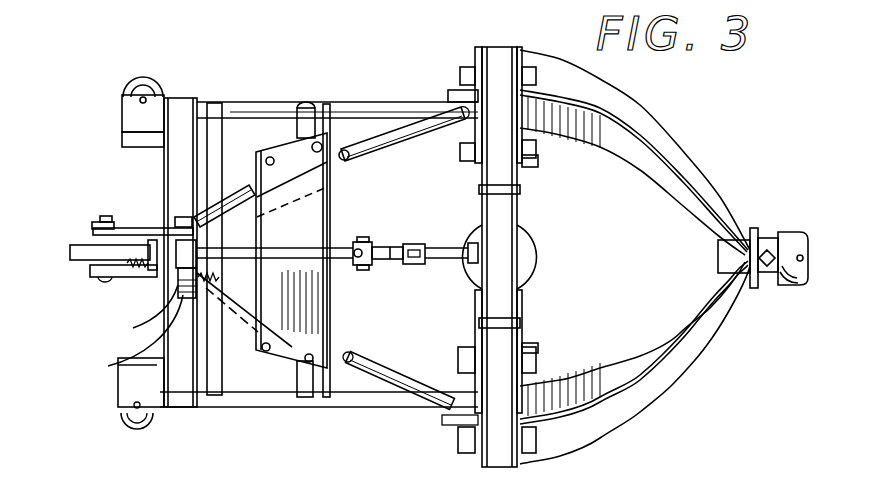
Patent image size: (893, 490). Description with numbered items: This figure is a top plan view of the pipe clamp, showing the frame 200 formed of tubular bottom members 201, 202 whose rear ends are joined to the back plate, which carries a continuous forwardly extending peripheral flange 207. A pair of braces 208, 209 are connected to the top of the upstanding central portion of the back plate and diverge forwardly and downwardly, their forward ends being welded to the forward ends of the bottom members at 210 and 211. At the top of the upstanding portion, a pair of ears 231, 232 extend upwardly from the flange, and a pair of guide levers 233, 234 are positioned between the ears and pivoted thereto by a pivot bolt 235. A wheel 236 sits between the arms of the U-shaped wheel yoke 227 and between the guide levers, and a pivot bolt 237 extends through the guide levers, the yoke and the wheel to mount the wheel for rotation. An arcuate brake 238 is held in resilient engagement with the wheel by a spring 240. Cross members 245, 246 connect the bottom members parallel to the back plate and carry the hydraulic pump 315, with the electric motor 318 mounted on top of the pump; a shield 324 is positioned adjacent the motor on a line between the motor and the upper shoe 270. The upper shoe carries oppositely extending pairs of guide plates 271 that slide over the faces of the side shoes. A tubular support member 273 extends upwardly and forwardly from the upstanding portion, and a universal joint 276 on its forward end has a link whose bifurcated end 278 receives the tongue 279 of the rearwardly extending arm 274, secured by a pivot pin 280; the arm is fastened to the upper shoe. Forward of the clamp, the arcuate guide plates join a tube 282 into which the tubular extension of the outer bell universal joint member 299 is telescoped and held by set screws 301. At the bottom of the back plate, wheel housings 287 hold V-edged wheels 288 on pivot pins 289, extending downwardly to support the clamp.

The frame 200 is at (353, 406).
The tubular bottom member 201 is at (242, 400).
The tubular bottom member 202 is at (256, 106).
The peripheral flange 207 is at (181, 101).
The brace 208 is at (363, 356).
The brace 209 is at (402, 137).
The brace connection point 210 is at (448, 393).
The brace connection point 211 is at (456, 117).
The wheel yoke 227 is at (90, 238).
The ear 231 is at (172, 280).
The ear 232 is at (182, 232).
The guide lever 233 is at (117, 277).
The guide lever 234 is at (122, 227).
The pivot bolt 235 is at (112, 369).
The wheel 236 is at (83, 255).
The pivot bolt 237 is at (100, 280).
The arcuate brake 238 is at (153, 242).
The spring 240 is at (133, 275).
The cross member 245 is at (216, 133).
The cross member 246 is at (300, 104).
The upper shoe 270 is at (524, 248).
The guide plates 271 is at (481, 192).
The tubular support member 273 is at (292, 250).
The rearwardly extending arm 274 is at (445, 248).
The universal joint 276 is at (367, 243).
The bifurcated end 278 is at (410, 244).
The tongue 279 is at (419, 263).
The pivot pin 280 is at (200, 257).
The tube 282 is at (720, 271).
The wheel housing 287 is at (115, 399).
The wheel 288 is at (138, 422).
The pivot pin 289 is at (118, 393).
The outer bell universal joint member 299 is at (794, 232).
The set screw 301 is at (754, 228).
The hydraulic pump 315 is at (252, 163).
The electric motor 318 is at (255, 222).
The shield 324 is at (322, 209).